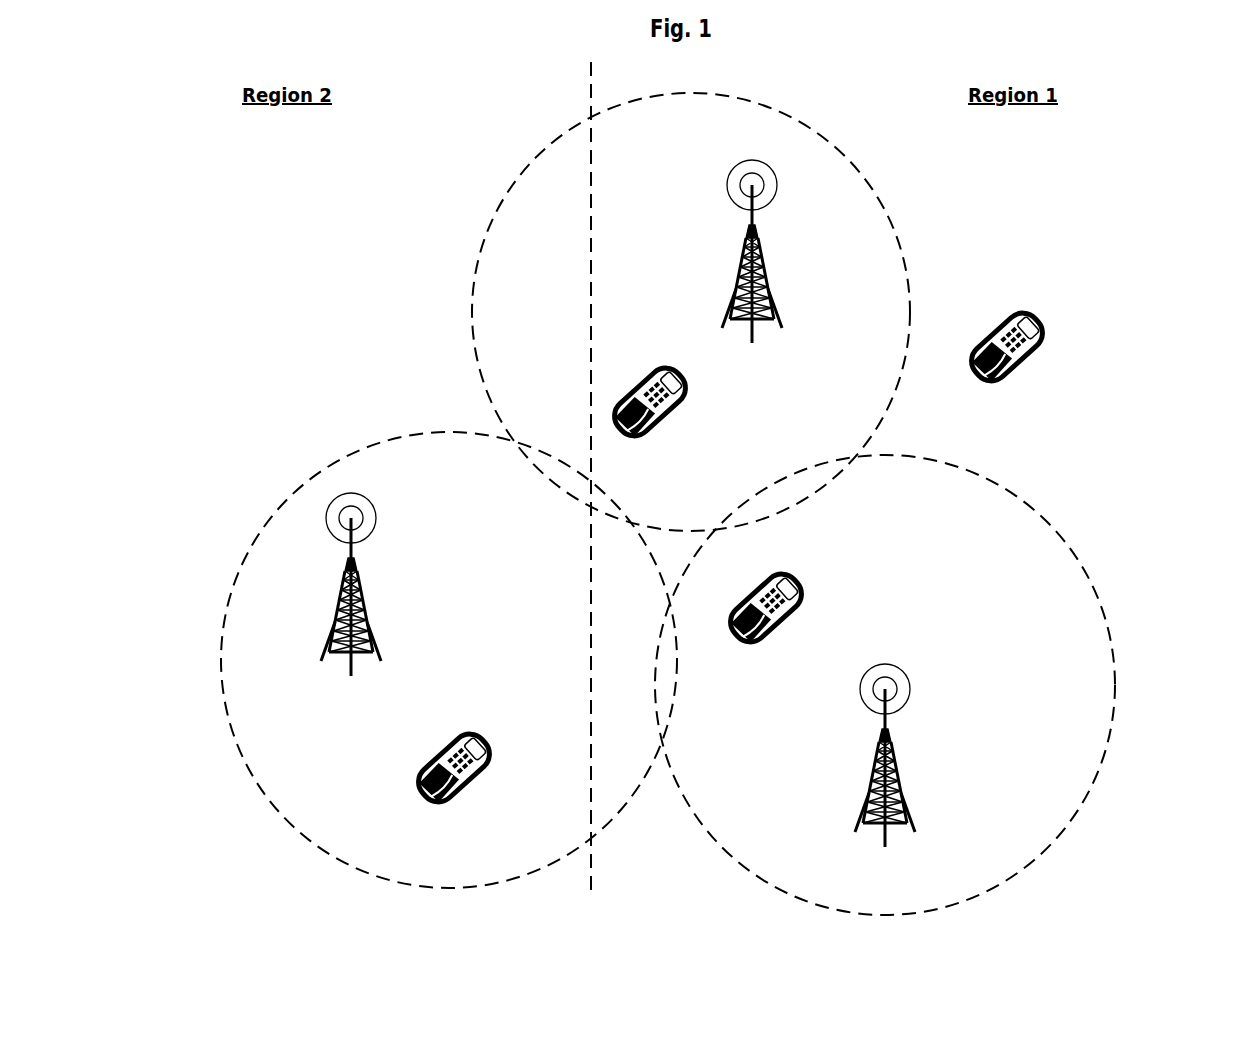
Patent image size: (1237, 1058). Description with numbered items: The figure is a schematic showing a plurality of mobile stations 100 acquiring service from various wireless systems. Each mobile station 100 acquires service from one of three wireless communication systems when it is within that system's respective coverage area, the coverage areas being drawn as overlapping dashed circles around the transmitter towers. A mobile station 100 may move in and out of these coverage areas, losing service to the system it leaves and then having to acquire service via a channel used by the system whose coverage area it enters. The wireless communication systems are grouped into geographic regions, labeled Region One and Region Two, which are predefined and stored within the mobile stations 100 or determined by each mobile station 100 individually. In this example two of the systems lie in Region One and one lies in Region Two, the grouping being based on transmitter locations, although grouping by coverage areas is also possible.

The mobile station 100 is at (684, 398).